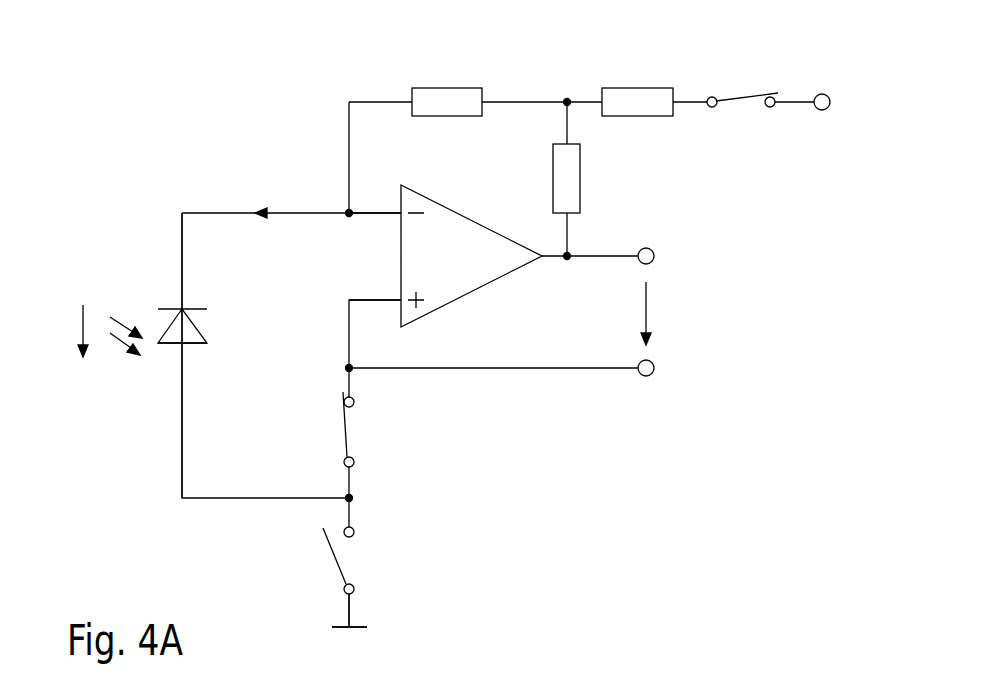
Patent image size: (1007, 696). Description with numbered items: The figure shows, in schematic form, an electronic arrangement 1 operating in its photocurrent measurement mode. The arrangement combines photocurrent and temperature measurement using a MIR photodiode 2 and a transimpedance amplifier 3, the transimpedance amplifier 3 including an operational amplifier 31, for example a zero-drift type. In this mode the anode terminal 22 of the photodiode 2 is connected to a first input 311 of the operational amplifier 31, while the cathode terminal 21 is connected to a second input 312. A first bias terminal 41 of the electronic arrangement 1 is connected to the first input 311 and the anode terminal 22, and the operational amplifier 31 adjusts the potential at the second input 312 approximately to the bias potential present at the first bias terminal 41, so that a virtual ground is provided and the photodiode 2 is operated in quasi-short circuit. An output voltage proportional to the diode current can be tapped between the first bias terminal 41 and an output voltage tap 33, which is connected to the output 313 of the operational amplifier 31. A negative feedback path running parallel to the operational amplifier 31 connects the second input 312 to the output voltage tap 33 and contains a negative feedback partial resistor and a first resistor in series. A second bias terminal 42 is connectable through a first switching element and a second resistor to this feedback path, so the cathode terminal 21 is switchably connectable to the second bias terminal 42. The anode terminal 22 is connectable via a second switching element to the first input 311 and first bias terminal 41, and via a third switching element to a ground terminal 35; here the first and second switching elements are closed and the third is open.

The electronic arrangement 1 is at (167, 87).
The photodiode 2 is at (198, 335).
The cathode terminal 21 is at (160, 290).
The anode terminal 22 is at (165, 368).
The transimpedance amplifier 3 is at (682, 42).
The operational amplifier 31 is at (484, 266).
The first input 311 is at (380, 286).
The second input 312 is at (380, 227).
The output 313 is at (552, 272).
The output voltage tap 33 is at (648, 246).
The ground terminal 35 is at (300, 625).
The first bias terminal 41 is at (648, 378).
The second bias terminal 42 is at (823, 93).